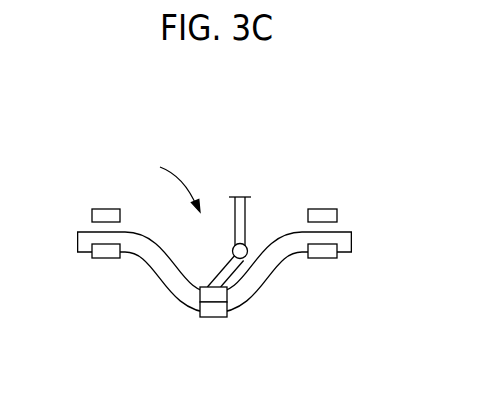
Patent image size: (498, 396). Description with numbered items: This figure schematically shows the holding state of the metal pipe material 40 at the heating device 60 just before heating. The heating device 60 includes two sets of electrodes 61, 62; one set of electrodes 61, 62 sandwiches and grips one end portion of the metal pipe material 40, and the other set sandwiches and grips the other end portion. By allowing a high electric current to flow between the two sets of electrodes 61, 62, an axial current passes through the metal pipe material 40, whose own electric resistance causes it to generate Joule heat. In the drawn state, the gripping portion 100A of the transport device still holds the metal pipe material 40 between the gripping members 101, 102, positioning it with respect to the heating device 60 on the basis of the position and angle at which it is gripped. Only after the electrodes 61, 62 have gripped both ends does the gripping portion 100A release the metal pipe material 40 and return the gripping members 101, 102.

The metal pipe material 40 is at (263, 290).
The heating device 60 is at (275, 152).
The electrode 61 is at (105, 209).
The electrode 62 is at (105, 258).
The gripping portion 100A is at (220, 187).
The gripping member 101 is at (205, 287).
The gripping member 102 is at (213, 310).